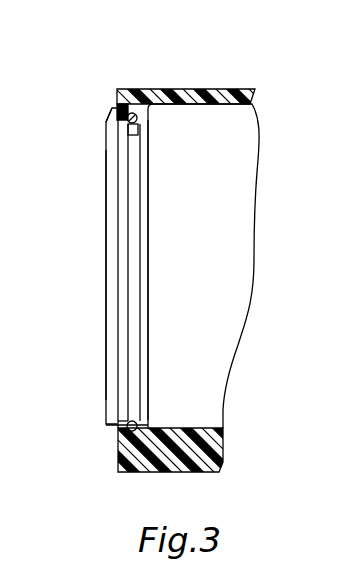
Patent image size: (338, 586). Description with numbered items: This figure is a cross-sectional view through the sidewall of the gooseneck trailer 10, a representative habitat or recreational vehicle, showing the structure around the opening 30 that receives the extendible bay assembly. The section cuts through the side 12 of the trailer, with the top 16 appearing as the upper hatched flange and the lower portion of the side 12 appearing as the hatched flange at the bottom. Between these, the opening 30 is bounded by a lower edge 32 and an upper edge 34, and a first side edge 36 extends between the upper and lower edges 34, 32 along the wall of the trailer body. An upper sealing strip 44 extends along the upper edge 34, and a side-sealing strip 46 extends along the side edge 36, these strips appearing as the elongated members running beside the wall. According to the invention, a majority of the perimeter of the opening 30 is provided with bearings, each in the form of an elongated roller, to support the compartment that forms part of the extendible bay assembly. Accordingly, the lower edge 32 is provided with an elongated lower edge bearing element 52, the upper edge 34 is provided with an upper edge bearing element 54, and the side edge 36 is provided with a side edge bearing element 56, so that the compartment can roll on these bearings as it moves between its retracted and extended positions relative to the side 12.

The gooseneck trailer 10 is at (228, 60).
The side 12 is at (118, 450).
The top 16 is at (190, 88).
The opening 30 is at (86, 282).
The lower edge 32 is at (137, 423).
The upper edge 34 is at (145, 114).
The first side edge 36 is at (146, 272).
The upper sealing strip 44 is at (106, 116).
The side-sealing strip 46 is at (108, 205).
The lower edge bearing element 52 is at (128, 423).
The upper edge bearing element 54 is at (137, 131).
The side edge bearing element 56 is at (142, 231).